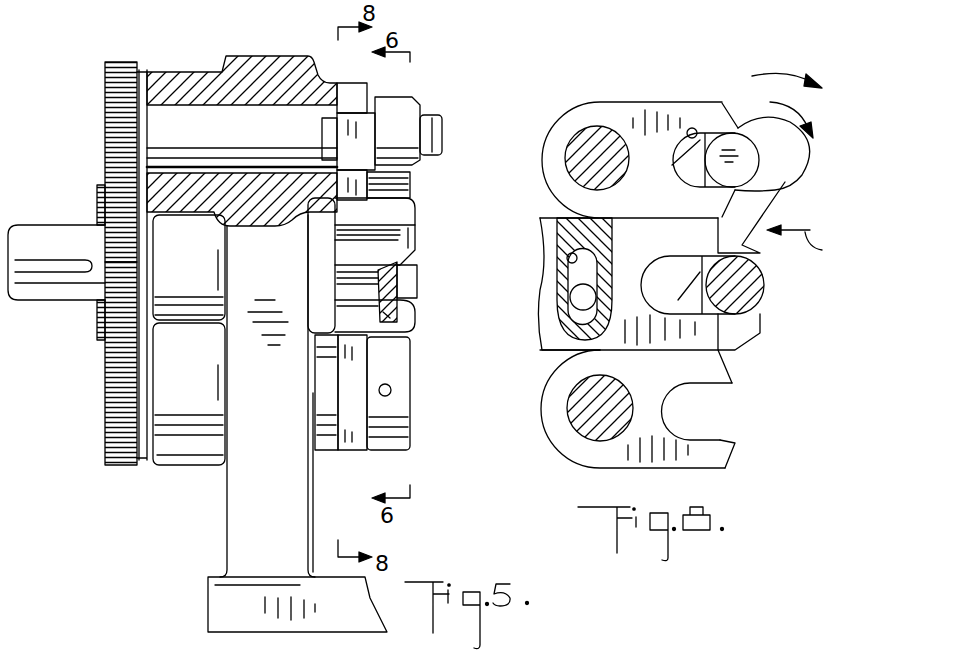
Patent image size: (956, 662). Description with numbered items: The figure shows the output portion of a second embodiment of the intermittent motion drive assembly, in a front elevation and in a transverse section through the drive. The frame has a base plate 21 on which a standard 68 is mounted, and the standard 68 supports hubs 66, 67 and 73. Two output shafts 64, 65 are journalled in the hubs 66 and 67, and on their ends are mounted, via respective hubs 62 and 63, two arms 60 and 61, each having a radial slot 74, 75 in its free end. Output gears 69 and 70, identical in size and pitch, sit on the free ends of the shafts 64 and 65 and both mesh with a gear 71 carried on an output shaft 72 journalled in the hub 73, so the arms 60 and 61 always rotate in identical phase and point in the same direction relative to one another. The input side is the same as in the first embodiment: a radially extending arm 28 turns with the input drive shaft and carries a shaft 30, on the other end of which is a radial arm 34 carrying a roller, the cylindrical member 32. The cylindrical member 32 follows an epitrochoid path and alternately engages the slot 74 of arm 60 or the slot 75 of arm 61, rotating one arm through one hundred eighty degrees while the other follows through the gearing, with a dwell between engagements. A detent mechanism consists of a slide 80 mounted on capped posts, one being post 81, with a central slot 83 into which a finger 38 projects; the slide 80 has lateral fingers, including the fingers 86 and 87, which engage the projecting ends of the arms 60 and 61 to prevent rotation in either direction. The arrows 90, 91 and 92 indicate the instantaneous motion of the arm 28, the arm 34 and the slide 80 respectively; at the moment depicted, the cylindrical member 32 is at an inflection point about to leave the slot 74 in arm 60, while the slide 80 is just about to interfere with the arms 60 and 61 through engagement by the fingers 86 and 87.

In FIG. 5, the base plate 21 is at (355, 628).
In FIG. 8, the radially extending arm 28 is at (758, 204).
In FIG. 5, the shaft 30 is at (440, 147).
In FIG. 5, the cylindrical member 32 is at (345, 130).
In FIG. 8, the cylindrical member 32 is at (738, 112).
In FIG. 5, the radial arm 34 is at (423, 110).
In FIG. 8, the radial arm 34 is at (790, 170).
In FIG. 5, the finger 38 is at (400, 283).
In FIG. 8, the finger 38 is at (578, 296).
In FIG. 5, the arm 60 is at (353, 88).
In FIG. 8, the arm 60 is at (625, 108).
In FIG. 5, the arm 61 is at (355, 447).
In FIG. 8, the arm 61 is at (722, 460).
In FIG. 5, the hub 62 is at (410, 190).
In FIG. 5, the hub 63 is at (385, 412).
In FIG. 5, the output shaft 64 is at (190, 120).
In FIG. 8, the output shaft 64 is at (577, 140).
In FIG. 8, the output shaft 65 is at (580, 423).
In FIG. 5, the hub 66 is at (162, 70).
In FIG. 5, the hub 67 is at (180, 456).
In FIG. 5, the standard 68 is at (237, 546).
In FIG. 5, the output gear 69 is at (110, 113).
In FIG. 5, the output gear 70 is at (108, 415).
In FIG. 5, the gear 71 is at (98, 310).
In FIG. 5, the output shaft 72 is at (41, 234).
In FIG. 5, the hub 73 is at (203, 268).
In FIG. 8, the radial slot 74 is at (695, 130).
In FIG. 8, the radial slot 75 is at (722, 440).
In FIG. 5, the slide 80 is at (412, 310).
In FIG. 8, the slide 80 is at (551, 352).
In FIG. 5, the capped post 81 is at (395, 233).
In FIG. 8, the capped post 81 is at (760, 295).
In FIG. 5, the central slot 83 is at (412, 258).
In FIG. 8, the central slot 83 is at (568, 257).
In FIG. 5, the projection or finger 86 is at (410, 208).
In FIG. 8, the projection or finger 86 is at (757, 257).
In FIG. 5, the projection or finger 87 is at (385, 313).
In FIG. 8, the projection or finger 87 is at (742, 333).
In FIG. 8, the arrow 90 is at (786, 74).
In FIG. 8, the arrow 91 is at (806, 112).
In FIG. 8, the arrow 92 is at (807, 245).